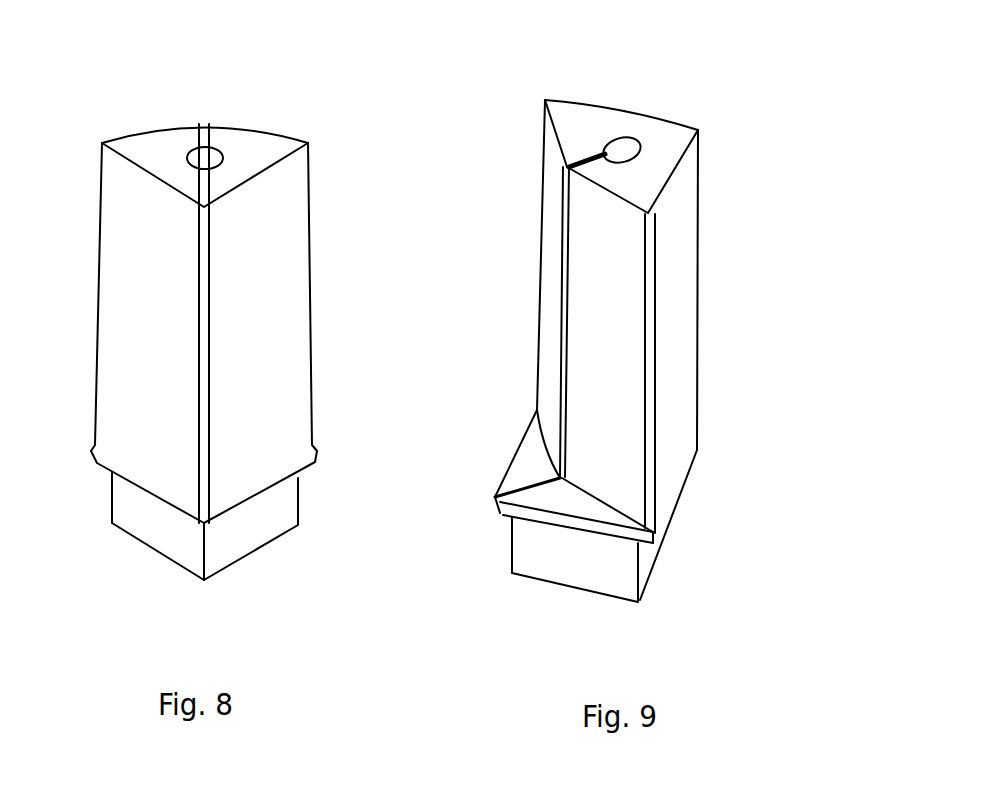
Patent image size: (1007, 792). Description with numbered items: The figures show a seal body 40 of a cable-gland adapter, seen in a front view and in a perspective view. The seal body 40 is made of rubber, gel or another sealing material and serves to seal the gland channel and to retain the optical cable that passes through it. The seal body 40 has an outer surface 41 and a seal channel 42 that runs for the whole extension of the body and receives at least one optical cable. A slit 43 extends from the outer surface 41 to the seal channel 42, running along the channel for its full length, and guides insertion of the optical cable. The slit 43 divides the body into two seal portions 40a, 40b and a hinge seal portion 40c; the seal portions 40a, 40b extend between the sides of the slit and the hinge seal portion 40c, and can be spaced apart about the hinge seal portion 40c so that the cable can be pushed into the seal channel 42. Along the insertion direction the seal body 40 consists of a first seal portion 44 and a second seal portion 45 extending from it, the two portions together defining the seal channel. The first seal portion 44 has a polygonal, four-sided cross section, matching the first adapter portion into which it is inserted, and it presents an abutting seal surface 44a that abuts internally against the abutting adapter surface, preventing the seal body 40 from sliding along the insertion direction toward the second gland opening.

In FIG. 8, the seal body 40 is at (155, 592).
In FIG. 9, the seal body 40 is at (534, 620).
In FIG. 9, the seal portion 40a is at (593, 127).
In FIG. 9, the seal portion 40b is at (632, 192).
In FIG. 9, the hinge seal portion 40c is at (672, 135).
In FIG. 8, the outer surface 41 is at (282, 325).
In FIG. 9, the outer surface 41 is at (613, 363).
In FIG. 8, the seal channel 42 is at (198, 152).
In FIG. 9, the seal channel 42 is at (622, 149).
In FIG. 9, the slit 43 is at (562, 203).
In FIG. 8, the first seal portion 44 is at (284, 513).
In FIG. 9, the first seal portion 44 is at (658, 562).
In FIG. 9, the abutting seal surface 44a is at (555, 492).
In FIG. 8, the second seal portion 45 is at (326, 292).
In FIG. 9, the second seal portion 45 is at (703, 342).